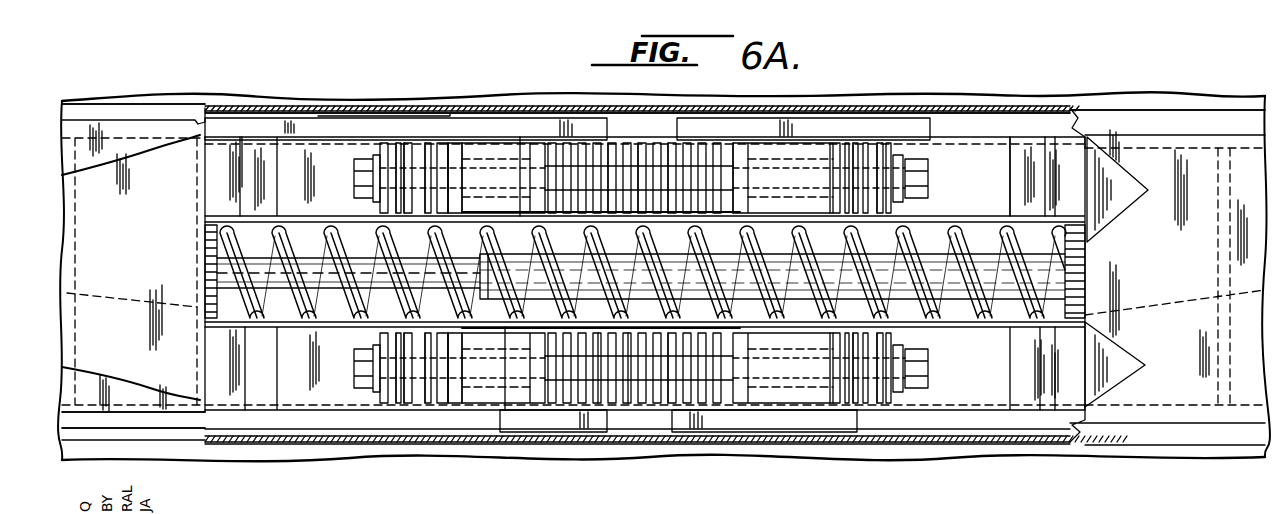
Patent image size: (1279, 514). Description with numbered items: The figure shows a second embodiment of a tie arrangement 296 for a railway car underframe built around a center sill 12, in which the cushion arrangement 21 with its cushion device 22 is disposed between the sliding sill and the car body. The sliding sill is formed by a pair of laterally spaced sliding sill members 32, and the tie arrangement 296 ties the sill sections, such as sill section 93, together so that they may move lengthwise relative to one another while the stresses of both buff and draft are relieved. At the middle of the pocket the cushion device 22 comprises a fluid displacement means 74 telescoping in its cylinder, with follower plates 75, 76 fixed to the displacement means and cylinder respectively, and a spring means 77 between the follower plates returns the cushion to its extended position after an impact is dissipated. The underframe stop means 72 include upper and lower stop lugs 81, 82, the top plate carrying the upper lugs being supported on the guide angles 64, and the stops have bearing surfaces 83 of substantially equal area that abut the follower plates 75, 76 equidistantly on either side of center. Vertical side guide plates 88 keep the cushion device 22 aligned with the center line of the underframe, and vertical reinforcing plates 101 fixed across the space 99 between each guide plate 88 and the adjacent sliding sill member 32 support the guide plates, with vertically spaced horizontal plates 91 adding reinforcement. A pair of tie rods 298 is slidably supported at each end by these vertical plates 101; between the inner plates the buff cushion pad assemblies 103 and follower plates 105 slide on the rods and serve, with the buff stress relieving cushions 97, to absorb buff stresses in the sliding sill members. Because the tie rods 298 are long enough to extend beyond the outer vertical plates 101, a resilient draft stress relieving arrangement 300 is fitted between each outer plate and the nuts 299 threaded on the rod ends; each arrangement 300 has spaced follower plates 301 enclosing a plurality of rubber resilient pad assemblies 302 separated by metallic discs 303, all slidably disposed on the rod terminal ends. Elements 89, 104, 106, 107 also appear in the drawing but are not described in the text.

The center sill 12 is at (516, 467).
The cushion arrangement 21 is at (772, 456).
The cushion device 22 is at (648, 305).
The sliding sill members 32 is at (512, 123).
The guide angles 64 is at (188, 110).
The underframe stop means 72 is at (180, 305).
The fluid displacement means 74 is at (385, 270).
The follower plate 75 is at (205, 262).
The follower plate 76 is at (1090, 262).
The spring means 77 is at (698, 233).
The upper stop lug 81 is at (152, 400).
The lower stop lug 82 is at (108, 286).
The bearing surfaces 83 is at (207, 288).
The side guide plates 88 is at (462, 214).
The support post 89 is at (520, 150).
The horizontal plates 91 is at (240, 140).
The sill section 93 is at (478, 112).
The buff stress relieving cushions 97 is at (629, 143).
The space 99 is at (310, 160).
The vertical reinforcing plates 101 is at (530, 210).
The buff cushion pad assemblies 103 is at (627, 405).
The compression spring 104 is at (615, 216).
The follower plates 105 is at (545, 184).
The cover plate 106 is at (607, 132).
The cover plate 107 is at (677, 132).
The tie arrangement 296 is at (737, 148).
The tie rods 298 is at (672, 175).
The nuts 299 is at (354, 182).
The resilient draft stress relieving arrangement 300 is at (417, 137).
The follower plates 301 is at (455, 135).
The resilient pad assemblies 302 is at (425, 214).
The metallic discs 303 is at (406, 146).